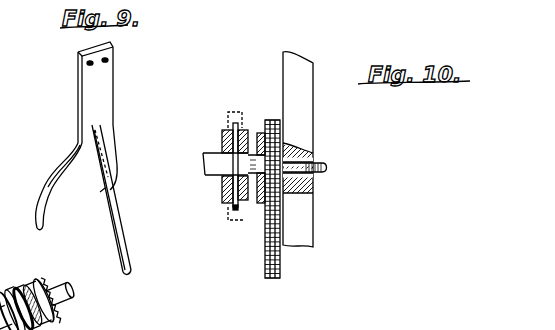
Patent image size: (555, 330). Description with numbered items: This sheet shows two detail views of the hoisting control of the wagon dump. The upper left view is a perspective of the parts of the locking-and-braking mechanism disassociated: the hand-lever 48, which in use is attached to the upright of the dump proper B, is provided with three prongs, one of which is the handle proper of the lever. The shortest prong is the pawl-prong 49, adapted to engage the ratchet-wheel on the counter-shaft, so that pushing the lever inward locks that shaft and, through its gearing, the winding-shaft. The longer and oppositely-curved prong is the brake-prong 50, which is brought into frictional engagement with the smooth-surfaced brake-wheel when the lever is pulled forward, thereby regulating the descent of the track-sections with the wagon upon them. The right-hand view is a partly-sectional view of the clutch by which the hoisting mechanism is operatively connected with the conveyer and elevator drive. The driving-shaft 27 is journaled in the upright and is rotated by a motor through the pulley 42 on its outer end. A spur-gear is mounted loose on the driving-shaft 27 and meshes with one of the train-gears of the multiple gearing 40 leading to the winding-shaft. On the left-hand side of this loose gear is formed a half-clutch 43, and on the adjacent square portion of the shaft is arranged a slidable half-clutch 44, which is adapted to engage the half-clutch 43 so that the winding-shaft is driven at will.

In FIG. 9, the pawl-prong 49 is at (117, 170).
In FIG. 9, the brake-prong 50 is at (60, 175).
In FIG. 9, the hand-lever 48 is at (117, 220).
In FIG. 10, the dump proper B is at (306, 98).
In FIG. 10, the driving-shaft 27 is at (327, 172).
In FIG. 10, the slidable half-clutch 44 is at (235, 220).
In FIG. 10, the half-clutch 43 is at (262, 205).
In FIG. 10, the multiple gearing 40 is at (266, 280).
In FIG. 10, the pulley 42 is at (267, 121).